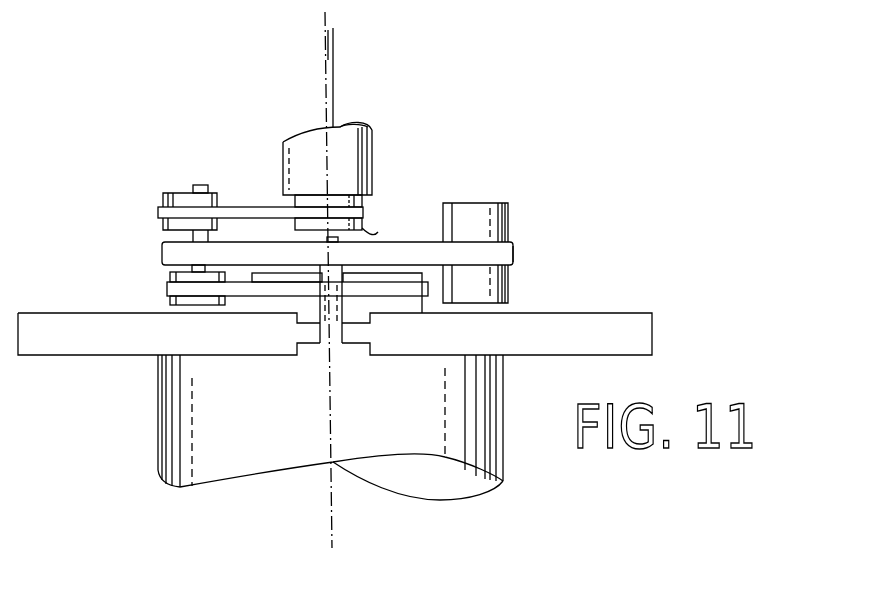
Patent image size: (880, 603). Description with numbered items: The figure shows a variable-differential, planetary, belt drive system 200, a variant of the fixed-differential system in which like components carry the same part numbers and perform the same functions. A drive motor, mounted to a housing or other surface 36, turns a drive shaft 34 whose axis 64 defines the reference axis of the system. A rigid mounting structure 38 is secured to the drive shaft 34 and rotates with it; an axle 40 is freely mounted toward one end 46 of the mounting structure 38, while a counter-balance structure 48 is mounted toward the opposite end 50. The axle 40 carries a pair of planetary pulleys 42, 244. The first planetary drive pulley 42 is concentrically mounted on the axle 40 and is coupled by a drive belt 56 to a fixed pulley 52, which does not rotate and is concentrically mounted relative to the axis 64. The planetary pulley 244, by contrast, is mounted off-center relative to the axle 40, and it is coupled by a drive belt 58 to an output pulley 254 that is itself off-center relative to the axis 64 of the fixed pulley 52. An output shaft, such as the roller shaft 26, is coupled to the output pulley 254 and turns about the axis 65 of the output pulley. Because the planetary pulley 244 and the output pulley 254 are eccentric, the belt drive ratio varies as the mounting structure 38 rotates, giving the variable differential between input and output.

The variable-differential belt drive system 200 is at (618, 70).
The roller shaft 26 is at (373, 162).
The drive shaft 34 is at (322, 332).
The housing 36 is at (598, 315).
The mounting structure 38 is at (418, 242).
The axle 40 is at (203, 186).
The first planetary drive pulley 42 is at (170, 277).
The one end of the mounting structure 46 is at (162, 255).
The counter-balance structure 48 is at (508, 232).
The opposite end of the mounting structure 50 is at (513, 257).
The fixed pulley 52 is at (403, 307).
The drive belt 56 is at (165, 288).
The drive belt 58 is at (162, 214).
The axis of the motor shaft 64 is at (333, 102).
The axis of the output pulley 65 is at (325, 53).
The planetary pulley 244 is at (173, 193).
The output pulley 254 is at (365, 235).